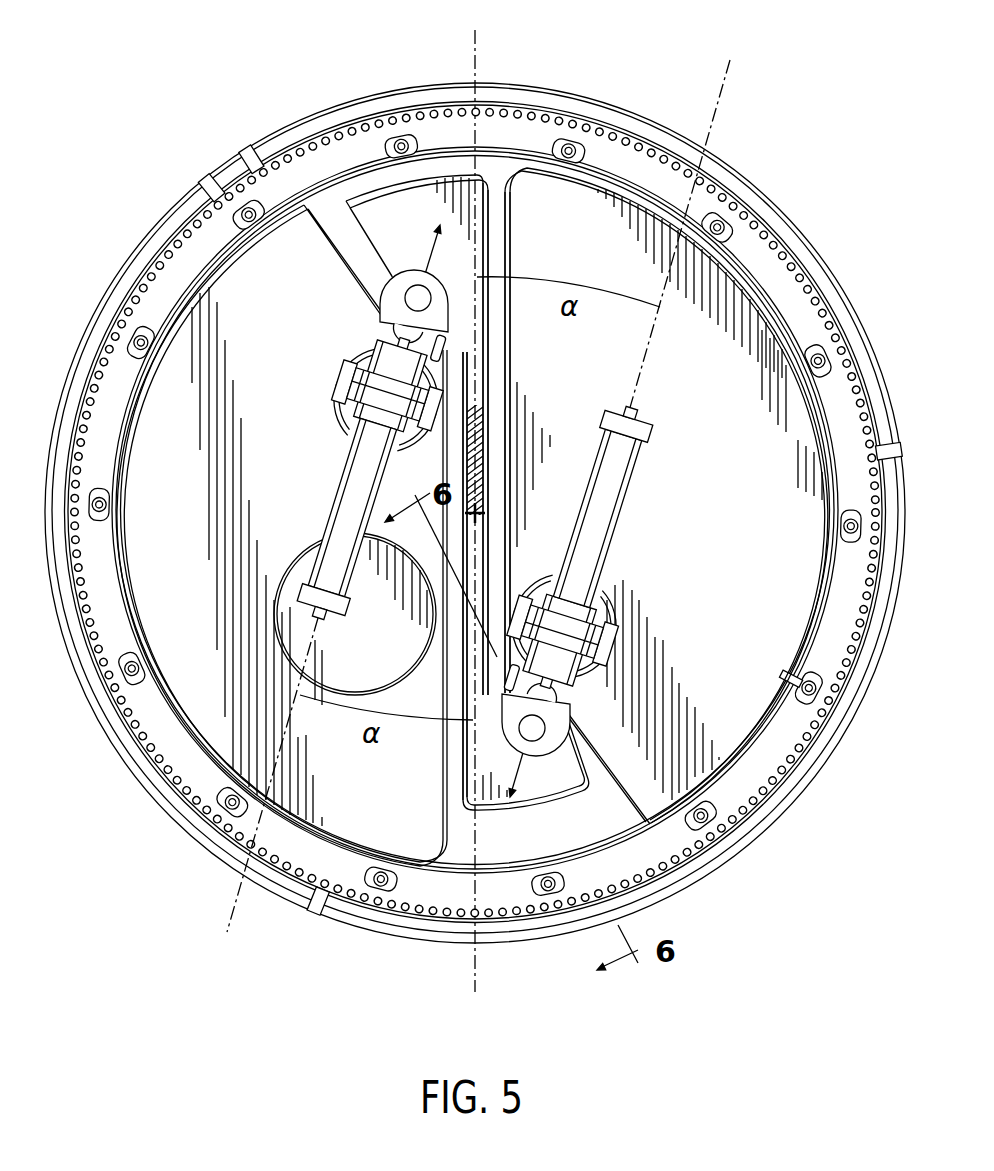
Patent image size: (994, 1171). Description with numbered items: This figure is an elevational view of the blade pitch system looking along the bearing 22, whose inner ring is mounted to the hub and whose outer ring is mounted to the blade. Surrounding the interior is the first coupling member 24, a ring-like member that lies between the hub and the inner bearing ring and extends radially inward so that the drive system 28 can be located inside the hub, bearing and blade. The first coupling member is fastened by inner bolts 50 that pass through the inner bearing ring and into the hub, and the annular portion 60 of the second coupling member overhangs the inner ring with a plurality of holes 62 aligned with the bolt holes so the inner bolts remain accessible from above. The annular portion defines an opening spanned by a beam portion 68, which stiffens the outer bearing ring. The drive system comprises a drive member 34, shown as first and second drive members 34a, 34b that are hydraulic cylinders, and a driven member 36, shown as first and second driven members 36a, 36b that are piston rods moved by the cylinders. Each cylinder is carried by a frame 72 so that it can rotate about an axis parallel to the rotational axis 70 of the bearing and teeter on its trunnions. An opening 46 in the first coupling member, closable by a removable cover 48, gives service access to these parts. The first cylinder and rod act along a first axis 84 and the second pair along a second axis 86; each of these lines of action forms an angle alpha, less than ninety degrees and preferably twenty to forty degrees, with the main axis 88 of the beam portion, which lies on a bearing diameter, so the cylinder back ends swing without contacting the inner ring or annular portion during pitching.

The bearing 22 is at (668, 127).
The first coupling member 24 is at (472, 517).
The drive system 28 is at (554, 374).
The drive member 34 is at (478, 513).
The first drive member 34a is at (342, 460).
The second drive member 34b is at (622, 493).
The driven member 36 is at (503, 513).
The first driven member 36a is at (408, 338).
The second driven member 36b is at (560, 700).
The opening 46 is at (353, 602).
The removable cover 48 is at (380, 656).
The inner bolts 50 is at (842, 524).
The annular portion 60 is at (536, 139).
The holes 62 is at (571, 146).
The beam portion 68 is at (498, 238).
The rotational axis 70 is at (480, 511).
The frame 72 is at (386, 386).
The first axis 84 is at (228, 925).
The second axis 86 is at (740, 97).
The main axis 88 is at (474, 980).